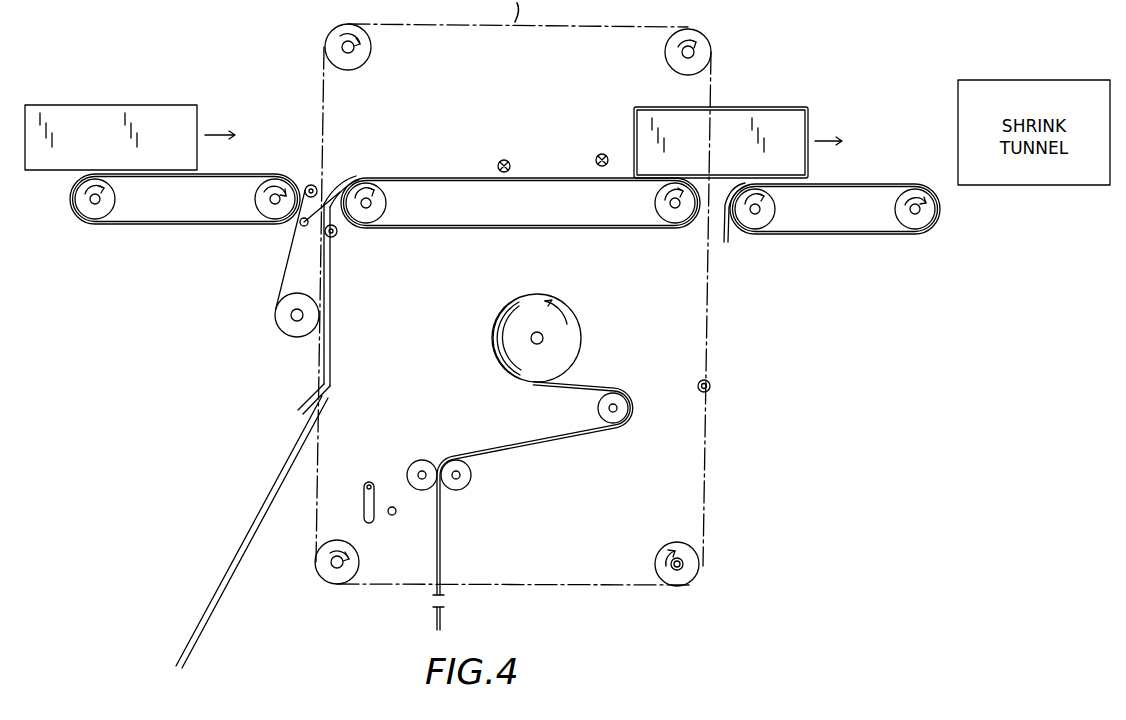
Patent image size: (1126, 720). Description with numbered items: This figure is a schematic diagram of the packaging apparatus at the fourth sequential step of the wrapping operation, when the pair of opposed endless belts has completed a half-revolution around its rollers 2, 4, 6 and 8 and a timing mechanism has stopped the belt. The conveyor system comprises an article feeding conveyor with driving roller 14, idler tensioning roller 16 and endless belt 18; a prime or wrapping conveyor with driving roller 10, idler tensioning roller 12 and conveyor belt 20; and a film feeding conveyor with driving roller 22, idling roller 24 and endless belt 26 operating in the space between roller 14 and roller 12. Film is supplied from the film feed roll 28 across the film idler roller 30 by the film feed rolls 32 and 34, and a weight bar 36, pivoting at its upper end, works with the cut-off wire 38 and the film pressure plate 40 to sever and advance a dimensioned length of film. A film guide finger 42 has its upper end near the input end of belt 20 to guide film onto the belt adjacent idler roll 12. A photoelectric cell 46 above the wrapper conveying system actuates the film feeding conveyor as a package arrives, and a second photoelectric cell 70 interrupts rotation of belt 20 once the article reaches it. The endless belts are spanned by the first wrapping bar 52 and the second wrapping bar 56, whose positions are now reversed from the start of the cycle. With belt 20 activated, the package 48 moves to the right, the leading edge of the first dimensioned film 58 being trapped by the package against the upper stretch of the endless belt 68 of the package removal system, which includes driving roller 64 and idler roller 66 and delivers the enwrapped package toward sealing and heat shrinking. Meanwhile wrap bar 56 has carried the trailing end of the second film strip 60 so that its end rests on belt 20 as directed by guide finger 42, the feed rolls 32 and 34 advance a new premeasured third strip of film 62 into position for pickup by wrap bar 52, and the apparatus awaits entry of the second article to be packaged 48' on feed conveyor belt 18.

The roller 2 is at (362, 62).
The roller 4 is at (712, 50).
The roller 6 is at (699, 566).
The roller 8 is at (335, 582).
The driving roller 10 is at (655, 203).
The idler tensioning roller 12 is at (388, 205).
The driving roller 14 is at (256, 199).
The idler tensioning roller 16 is at (93, 216).
The endless belt 18 is at (185, 223).
The conveyor belt 20 is at (545, 181).
The driving roller 22 is at (290, 327).
The idling roller 24 is at (311, 184).
The endless belt 26 is at (285, 258).
The film feed roll 28 is at (575, 347).
The film idler roller 30 is at (598, 408).
The film feed roll 32 is at (471, 475).
The film feed roll 34 is at (422, 460).
The weight bar 36 is at (364, 500).
The cut-off wire 38 is at (391, 515).
The film pressure plate 40 is at (328, 303).
The film guide finger 42 is at (333, 175).
The photoelectric cell 46 is at (498, 164).
The package article 48 is at (748, 139).
The second article to be packaged 48' is at (130, 124).
The first wrapping bar 52 is at (710, 385).
The second wrapping bar 56 is at (337, 233).
The first dimensioned film 58 is at (726, 242).
The second film strip 60 is at (318, 413).
The third strip of film 62 is at (441, 512).
The driving roller 64 is at (915, 230).
The idler roller 66 is at (752, 229).
The endless belt 68 is at (838, 233).
The second photoelectric cell 70 is at (606, 153).